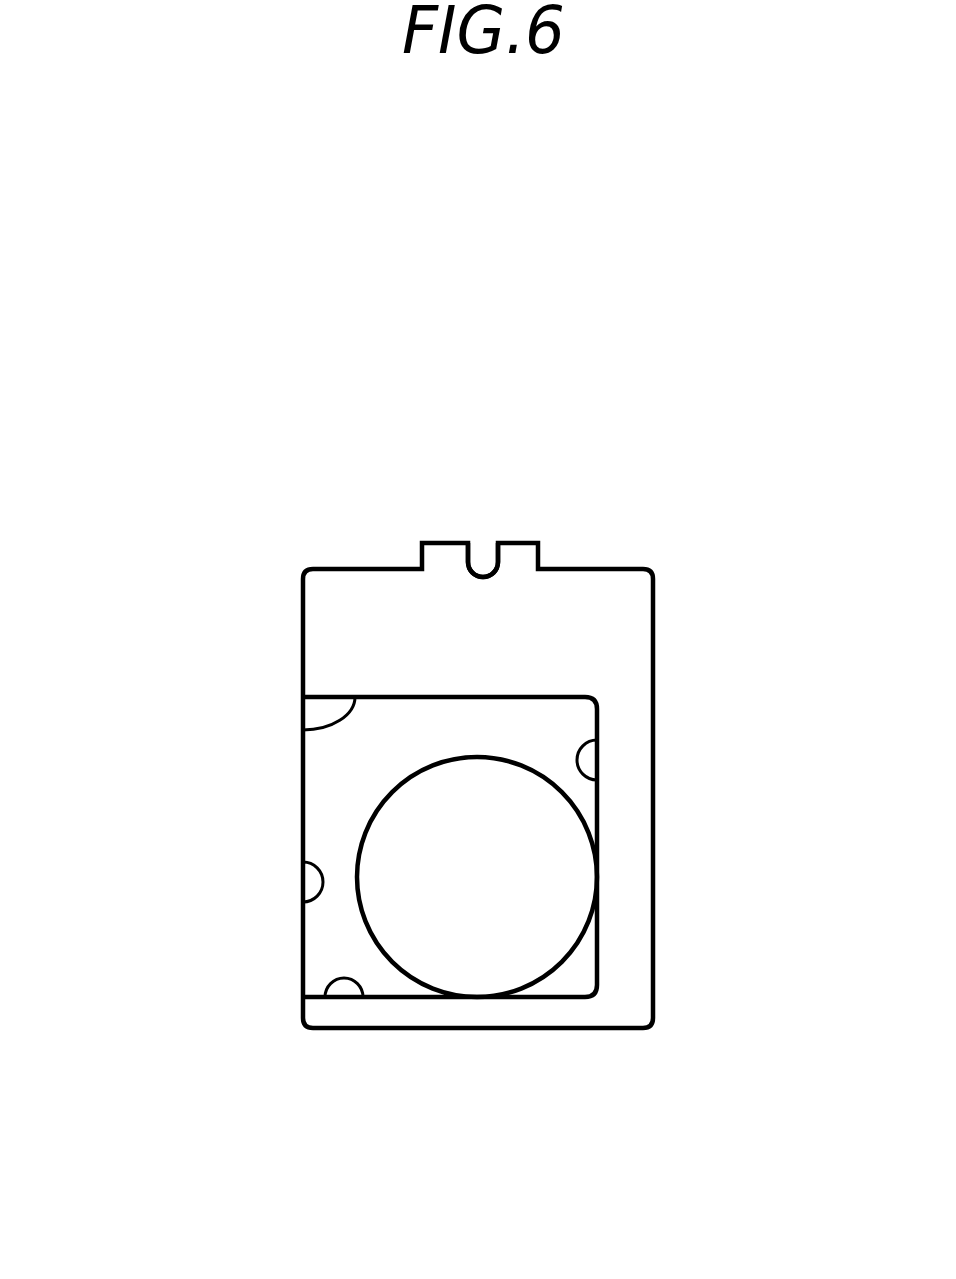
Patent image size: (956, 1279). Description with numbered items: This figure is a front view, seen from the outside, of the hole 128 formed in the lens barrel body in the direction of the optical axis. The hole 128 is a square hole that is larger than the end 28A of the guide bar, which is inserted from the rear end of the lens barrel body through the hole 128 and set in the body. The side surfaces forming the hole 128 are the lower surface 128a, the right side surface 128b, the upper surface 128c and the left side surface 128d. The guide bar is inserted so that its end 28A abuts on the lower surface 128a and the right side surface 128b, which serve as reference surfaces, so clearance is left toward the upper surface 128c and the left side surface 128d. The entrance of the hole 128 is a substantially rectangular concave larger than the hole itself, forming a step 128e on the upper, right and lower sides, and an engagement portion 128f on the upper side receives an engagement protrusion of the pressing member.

The hole 128 is at (410, 752).
The lower surface 128a is at (330, 985).
The right side surface 128b is at (578, 748).
The upper surface 128c is at (303, 729).
The left side surface 128d is at (300, 902).
The step 128e is at (598, 603).
The engagement portion 128f is at (480, 576).
The end of the guide bar 28A is at (467, 940).